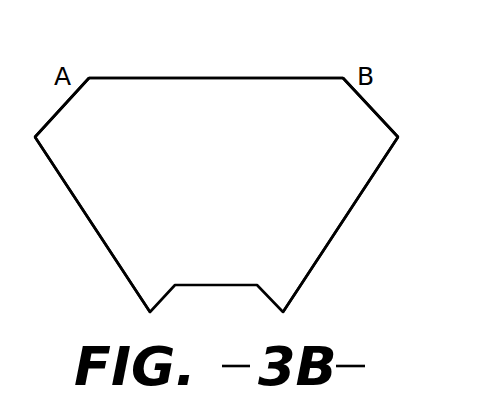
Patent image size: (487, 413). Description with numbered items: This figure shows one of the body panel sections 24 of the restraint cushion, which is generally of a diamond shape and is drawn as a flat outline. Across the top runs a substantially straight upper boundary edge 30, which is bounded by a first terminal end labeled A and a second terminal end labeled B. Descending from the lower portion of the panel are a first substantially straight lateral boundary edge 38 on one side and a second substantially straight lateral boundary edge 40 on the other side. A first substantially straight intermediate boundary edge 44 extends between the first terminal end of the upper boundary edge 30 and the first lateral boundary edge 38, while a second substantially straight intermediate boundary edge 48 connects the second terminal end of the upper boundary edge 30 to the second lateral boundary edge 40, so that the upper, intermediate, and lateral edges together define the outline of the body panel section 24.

The body panel section 24 is at (229, 190).
The upper boundary edge 30 is at (342, 62).
The first lateral boundary edge 38 is at (141, 320).
The second lateral boundary edge 40 is at (406, 140).
The first intermediate boundary edge 44 is at (70, 61).
The second intermediate boundary edge 48 is at (417, 117).